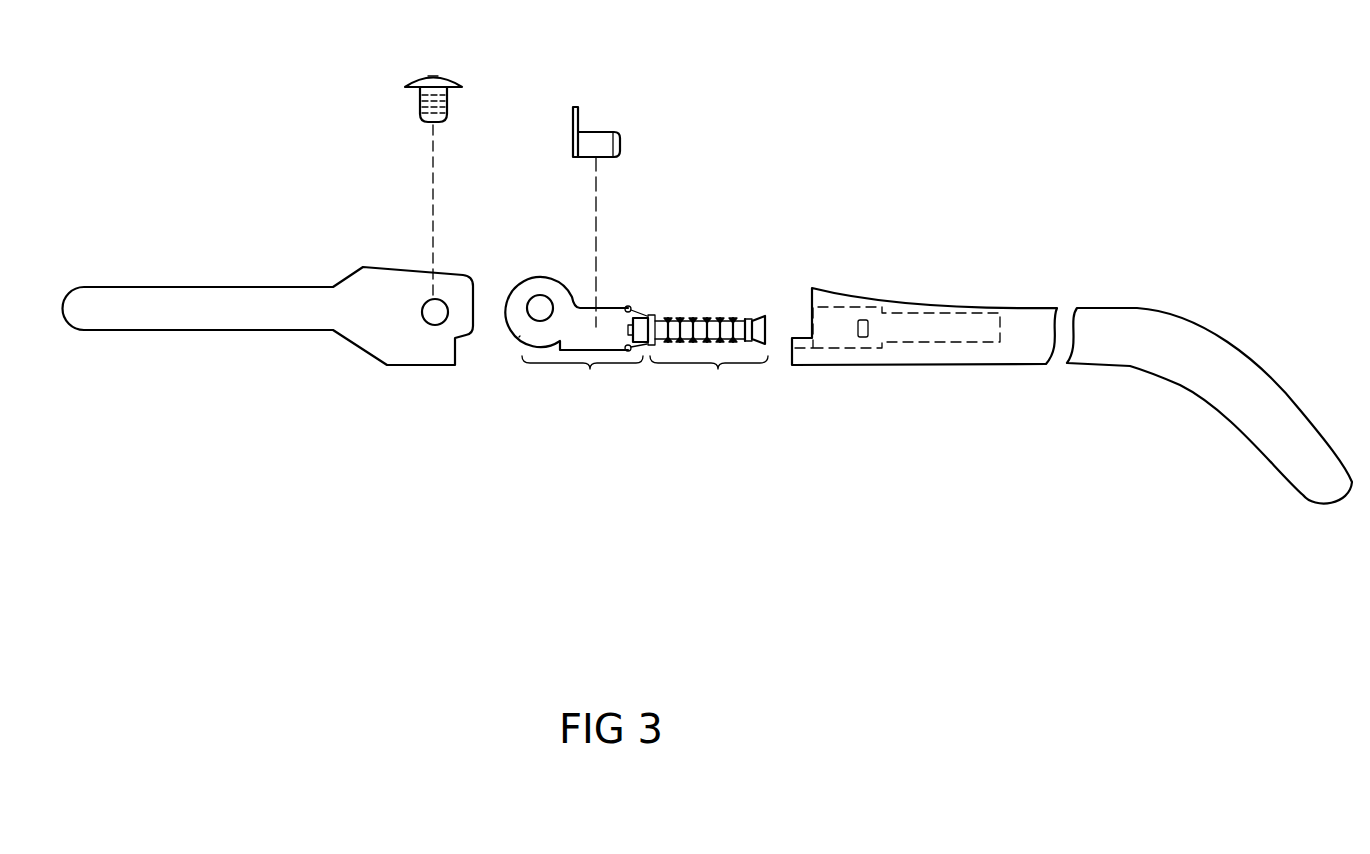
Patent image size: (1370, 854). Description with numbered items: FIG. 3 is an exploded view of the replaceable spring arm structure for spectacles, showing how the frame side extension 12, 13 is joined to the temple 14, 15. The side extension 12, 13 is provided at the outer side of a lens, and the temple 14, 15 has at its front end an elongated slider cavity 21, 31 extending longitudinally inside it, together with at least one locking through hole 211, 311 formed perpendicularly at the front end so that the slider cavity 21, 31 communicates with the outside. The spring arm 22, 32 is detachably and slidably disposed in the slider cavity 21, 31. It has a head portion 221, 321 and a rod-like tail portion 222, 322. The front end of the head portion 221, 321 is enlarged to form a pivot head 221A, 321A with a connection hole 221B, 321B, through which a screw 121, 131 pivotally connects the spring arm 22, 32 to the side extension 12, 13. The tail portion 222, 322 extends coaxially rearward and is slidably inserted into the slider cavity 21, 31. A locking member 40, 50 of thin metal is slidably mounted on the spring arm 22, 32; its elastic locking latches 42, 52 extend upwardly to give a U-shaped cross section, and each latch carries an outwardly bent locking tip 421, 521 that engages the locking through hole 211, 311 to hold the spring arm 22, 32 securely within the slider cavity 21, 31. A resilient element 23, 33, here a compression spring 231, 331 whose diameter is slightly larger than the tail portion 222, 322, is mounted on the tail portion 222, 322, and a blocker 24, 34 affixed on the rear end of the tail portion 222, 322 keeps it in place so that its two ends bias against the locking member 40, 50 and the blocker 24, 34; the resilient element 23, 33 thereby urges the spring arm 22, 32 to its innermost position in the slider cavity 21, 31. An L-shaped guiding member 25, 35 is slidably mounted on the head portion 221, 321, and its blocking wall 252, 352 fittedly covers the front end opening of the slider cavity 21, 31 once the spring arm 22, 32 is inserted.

The side extension 12 is at (268, 348).
The side extension 13 is at (150, 318).
The screw 121 is at (376, 187).
The screw 131 is at (420, 108).
The temple 14 is at (1191, 354).
The temple 15 is at (1030, 328).
The slider cavity 21 is at (924, 373).
The slider cavity 31 is at (924, 373).
The locking through hole 211 is at (847, 389).
The locking through hole 311 is at (863, 340).
The spring arm 22 is at (612, 340).
The spring arm 32 is at (612, 340).
The head portion 221 is at (512, 326).
The head portion 321 is at (512, 326).
The pivot head 221A is at (449, 407).
The pivot head 321A is at (520, 335).
The connection hole 221B is at (535, 247).
The connection hole 321B is at (540, 290).
The tail portion 222 is at (725, 287).
The tail portion 322 is at (725, 287).
The resilient element 23 is at (770, 219).
The resilient element 33 is at (770, 219).
The compression spring 231 is at (748, 268).
The compression spring 331 is at (695, 320).
The blocker 24 is at (795, 285).
The blocker 34 is at (795, 285).
The L-shaped guiding member 25 is at (575, 177).
The L-shaped guiding member 35 is at (575, 177).
The blocking wall 252 is at (536, 92).
The blocking wall 352 is at (598, 147).
The locking member 40 is at (675, 226).
The locking member 50 is at (675, 226).
The elastic locking latch 42 is at (696, 258).
The elastic locking latch 52 is at (648, 316).
The locking tip 421 is at (638, 259).
The locking tip 521 is at (643, 318).